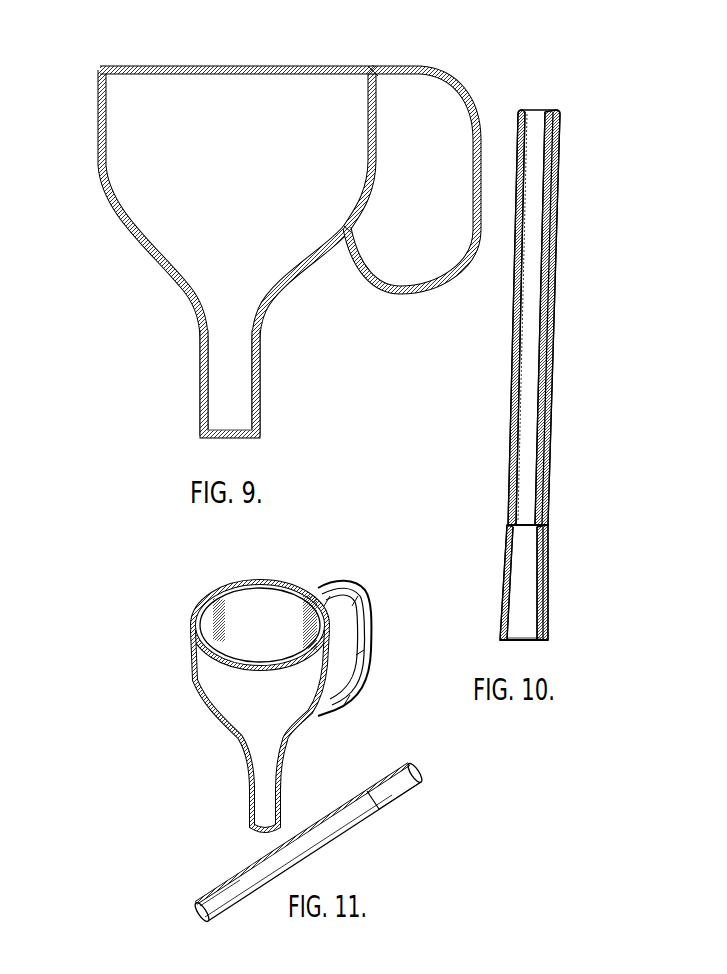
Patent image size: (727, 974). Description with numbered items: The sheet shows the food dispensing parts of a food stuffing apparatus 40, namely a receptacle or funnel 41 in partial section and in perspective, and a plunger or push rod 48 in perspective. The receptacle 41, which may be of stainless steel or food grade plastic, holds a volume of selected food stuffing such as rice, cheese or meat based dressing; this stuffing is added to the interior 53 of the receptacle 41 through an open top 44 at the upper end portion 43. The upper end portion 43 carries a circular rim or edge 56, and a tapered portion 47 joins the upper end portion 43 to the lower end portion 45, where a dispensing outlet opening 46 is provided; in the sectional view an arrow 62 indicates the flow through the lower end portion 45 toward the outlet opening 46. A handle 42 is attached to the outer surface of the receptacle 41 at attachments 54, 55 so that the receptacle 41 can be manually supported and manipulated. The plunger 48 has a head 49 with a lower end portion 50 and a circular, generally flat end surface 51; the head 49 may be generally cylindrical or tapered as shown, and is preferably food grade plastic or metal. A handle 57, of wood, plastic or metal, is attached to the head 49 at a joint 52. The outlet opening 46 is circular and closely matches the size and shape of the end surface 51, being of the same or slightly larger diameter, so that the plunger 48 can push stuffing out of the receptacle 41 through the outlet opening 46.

In FIG. 11, the food stuffing apparatus 40 is at (148, 644).
In FIG. 9, the receptacle 41 is at (108, 205).
In FIG. 11, the receptacle 41 is at (220, 690).
In FIG. 9, the handle 42 is at (448, 78).
In FIG. 11, the handle 42 is at (340, 580).
In FIG. 9, the upper end portion 43 is at (99, 67).
In FIG. 11, the upper end portion 43 is at (290, 587).
In FIG. 9, the open top 44 is at (232, 45).
In FIG. 9, the lower end portion 45 is at (202, 400).
In FIG. 11, the lower end portion 45 is at (258, 792).
In FIG. 9, the dispensing outlet opening 46 is at (228, 446).
In FIG. 9, the tapered portion 47 is at (177, 275).
In FIG. 10, the plunger 48 is at (538, 370).
In FIG. 11, the plunger 48 is at (332, 833).
In FIG. 10, the head 49 is at (522, 590).
In FIG. 11, the head 49 is at (410, 789).
In FIG. 10, the lower end portion 50 is at (547, 638).
In FIG. 10, the end surface 51 is at (523, 642).
In FIG. 10, the joint 52 is at (545, 523).
In FIG. 9, the interior 53 is at (242, 163).
In FIG. 9, the attachment 54 is at (373, 73).
In FIG. 9, the attachment 55 is at (347, 230).
In FIG. 9, the circular rim 56 is at (370, 67).
In FIG. 11, the circular rim 56 is at (237, 587).
In FIG. 10, the handle 57 is at (538, 208).
In FIG. 11, the handle 57 is at (240, 905).
In FIG. 9, the flow passage 62 is at (220, 402).